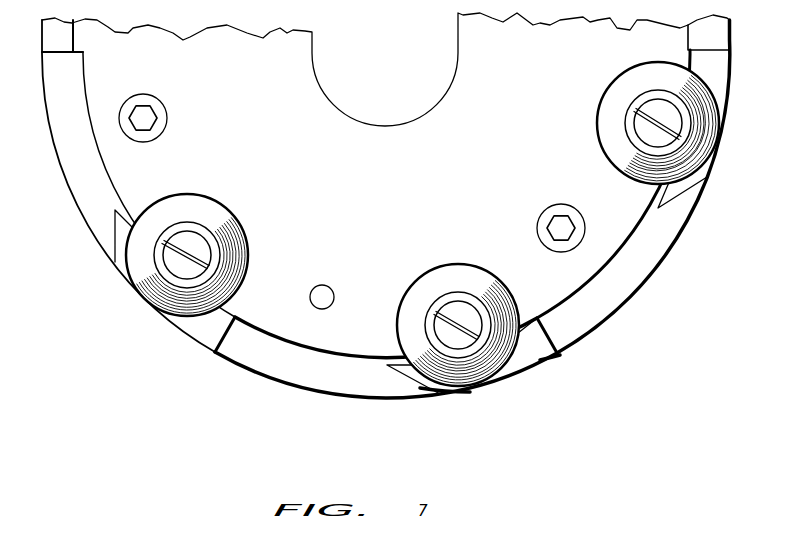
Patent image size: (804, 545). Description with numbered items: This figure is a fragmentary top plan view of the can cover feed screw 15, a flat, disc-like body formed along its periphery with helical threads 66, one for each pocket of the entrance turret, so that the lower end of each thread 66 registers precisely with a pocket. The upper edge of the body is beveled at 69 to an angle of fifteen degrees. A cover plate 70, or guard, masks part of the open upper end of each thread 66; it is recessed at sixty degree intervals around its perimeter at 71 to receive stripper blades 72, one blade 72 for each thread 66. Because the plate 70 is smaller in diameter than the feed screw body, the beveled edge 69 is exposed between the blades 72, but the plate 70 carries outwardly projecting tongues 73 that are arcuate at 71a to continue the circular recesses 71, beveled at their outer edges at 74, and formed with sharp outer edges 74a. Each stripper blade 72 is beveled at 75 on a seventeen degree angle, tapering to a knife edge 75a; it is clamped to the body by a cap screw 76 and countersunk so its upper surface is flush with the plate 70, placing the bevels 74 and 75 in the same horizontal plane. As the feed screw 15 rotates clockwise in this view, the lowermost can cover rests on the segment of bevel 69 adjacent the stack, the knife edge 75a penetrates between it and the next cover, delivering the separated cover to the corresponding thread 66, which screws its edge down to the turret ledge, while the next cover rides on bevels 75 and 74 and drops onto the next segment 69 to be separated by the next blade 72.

The feed screw 15 is at (213, 368).
The helical thread 66 is at (442, 394).
The beveled edge 69 is at (603, 310).
The cover plate 70 is at (386, 161).
The recess 71 is at (598, 118).
The arcuate portion 71a is at (510, 365).
The stripper blade 72 is at (603, 83).
The tongue 73 is at (553, 330).
The beveled outer edge 74 is at (530, 342).
The sharp outer edge 74a is at (547, 360).
The bevel 75 is at (478, 284).
The knife edge 75a is at (447, 395).
The cap screw 76 is at (456, 305).